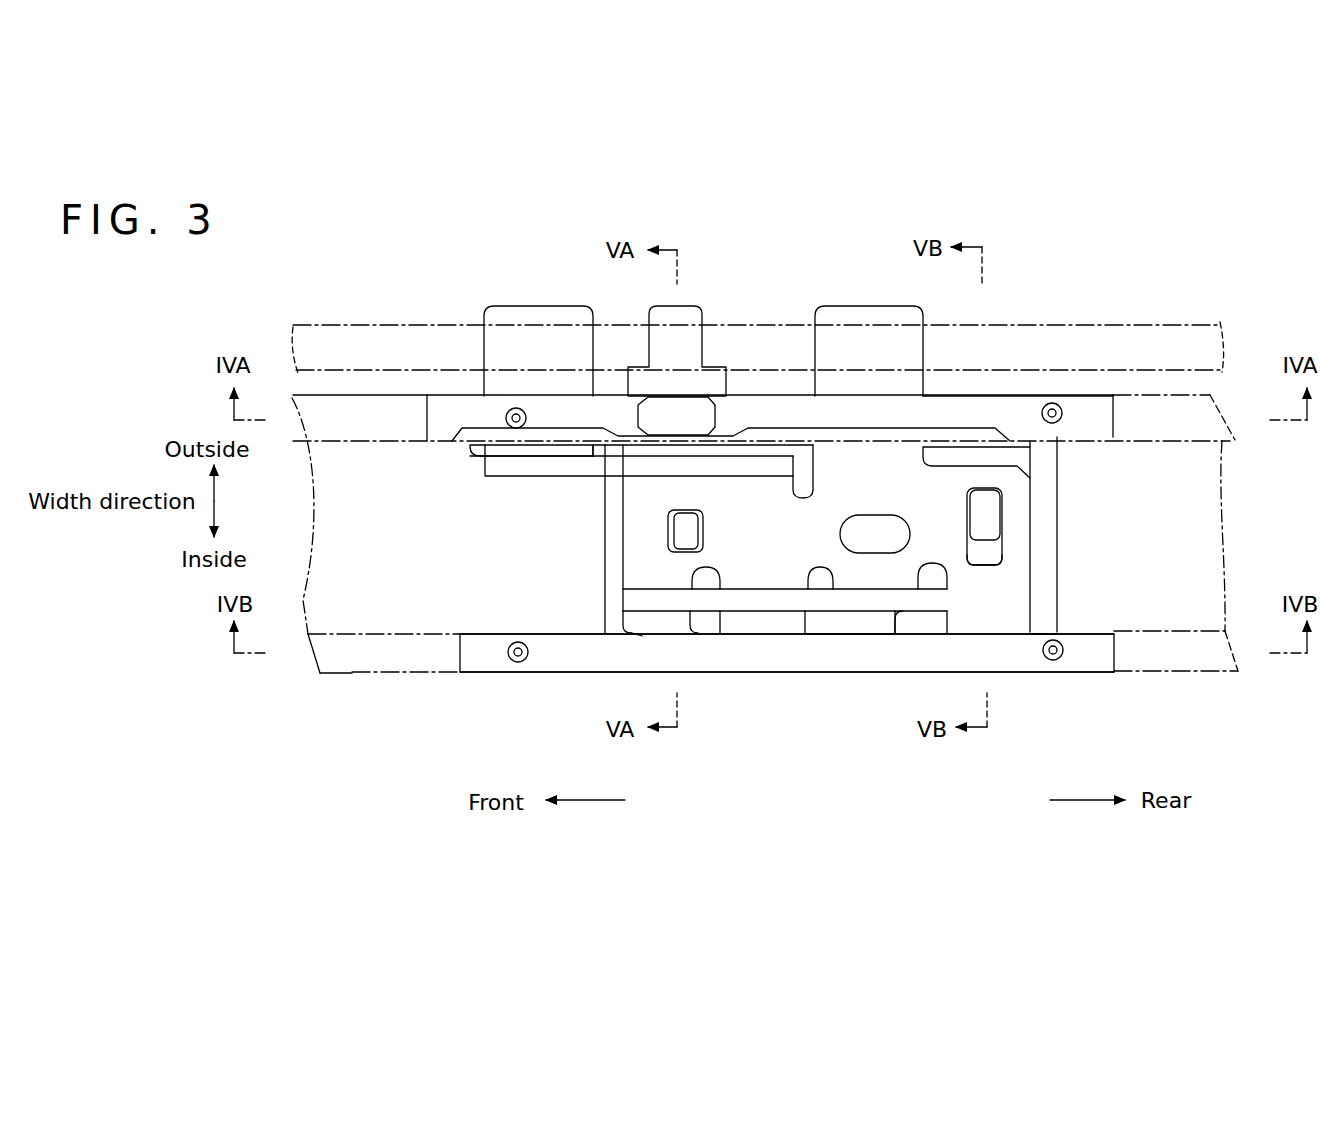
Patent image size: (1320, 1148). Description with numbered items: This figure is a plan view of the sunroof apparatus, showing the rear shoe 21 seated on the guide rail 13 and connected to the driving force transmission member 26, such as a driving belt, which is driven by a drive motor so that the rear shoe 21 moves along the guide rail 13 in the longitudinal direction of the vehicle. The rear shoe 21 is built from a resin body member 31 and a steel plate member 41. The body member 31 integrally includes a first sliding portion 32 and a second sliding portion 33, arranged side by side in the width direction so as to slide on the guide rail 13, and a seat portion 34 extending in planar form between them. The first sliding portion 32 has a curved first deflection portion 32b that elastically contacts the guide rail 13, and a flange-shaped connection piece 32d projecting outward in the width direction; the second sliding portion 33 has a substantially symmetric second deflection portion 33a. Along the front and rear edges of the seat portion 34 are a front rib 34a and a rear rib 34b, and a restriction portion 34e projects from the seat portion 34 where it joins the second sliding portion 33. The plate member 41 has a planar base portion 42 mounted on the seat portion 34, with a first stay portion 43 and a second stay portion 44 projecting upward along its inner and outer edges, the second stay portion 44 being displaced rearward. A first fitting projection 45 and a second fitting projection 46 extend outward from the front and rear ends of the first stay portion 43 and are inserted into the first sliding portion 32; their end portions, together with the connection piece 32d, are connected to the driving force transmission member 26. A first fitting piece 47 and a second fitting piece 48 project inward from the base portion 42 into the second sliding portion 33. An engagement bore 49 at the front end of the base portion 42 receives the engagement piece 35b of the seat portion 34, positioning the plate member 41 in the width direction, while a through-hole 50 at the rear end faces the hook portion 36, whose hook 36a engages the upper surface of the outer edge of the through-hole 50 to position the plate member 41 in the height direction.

The guide rail 13 is at (345, 675).
The rear shoe 21 is at (505, 688).
The driving force transmission member 26 is at (1082, 322).
The body member 31 is at (1010, 660).
The first sliding portion 32 is at (439, 433).
The first deflection portion 32b is at (953, 403).
The connection piece 32d is at (688, 310).
The second sliding portion 33 is at (477, 640).
The second deflection portion 33a is at (863, 660).
The seat portion 34 is at (795, 575).
The front rib 34a is at (607, 496).
The rear rib 34b is at (1042, 493).
The restriction portion 34e is at (615, 623).
The engagement piece 35b is at (677, 508).
The hook portion 36 is at (983, 523).
The hook 36a is at (975, 491).
The plate member 41 is at (1018, 537).
The base portion 42 is at (632, 540).
The first stay portion 43 is at (510, 468).
The second stay portion 44 is at (775, 590).
The first fitting projection 45 is at (512, 308).
The second fitting projection 46 is at (848, 304).
The first fitting piece 47 is at (752, 625).
The second fitting piece 48 is at (1023, 625).
The engagement bore 49 is at (695, 531).
The through-hole 50 is at (983, 563).